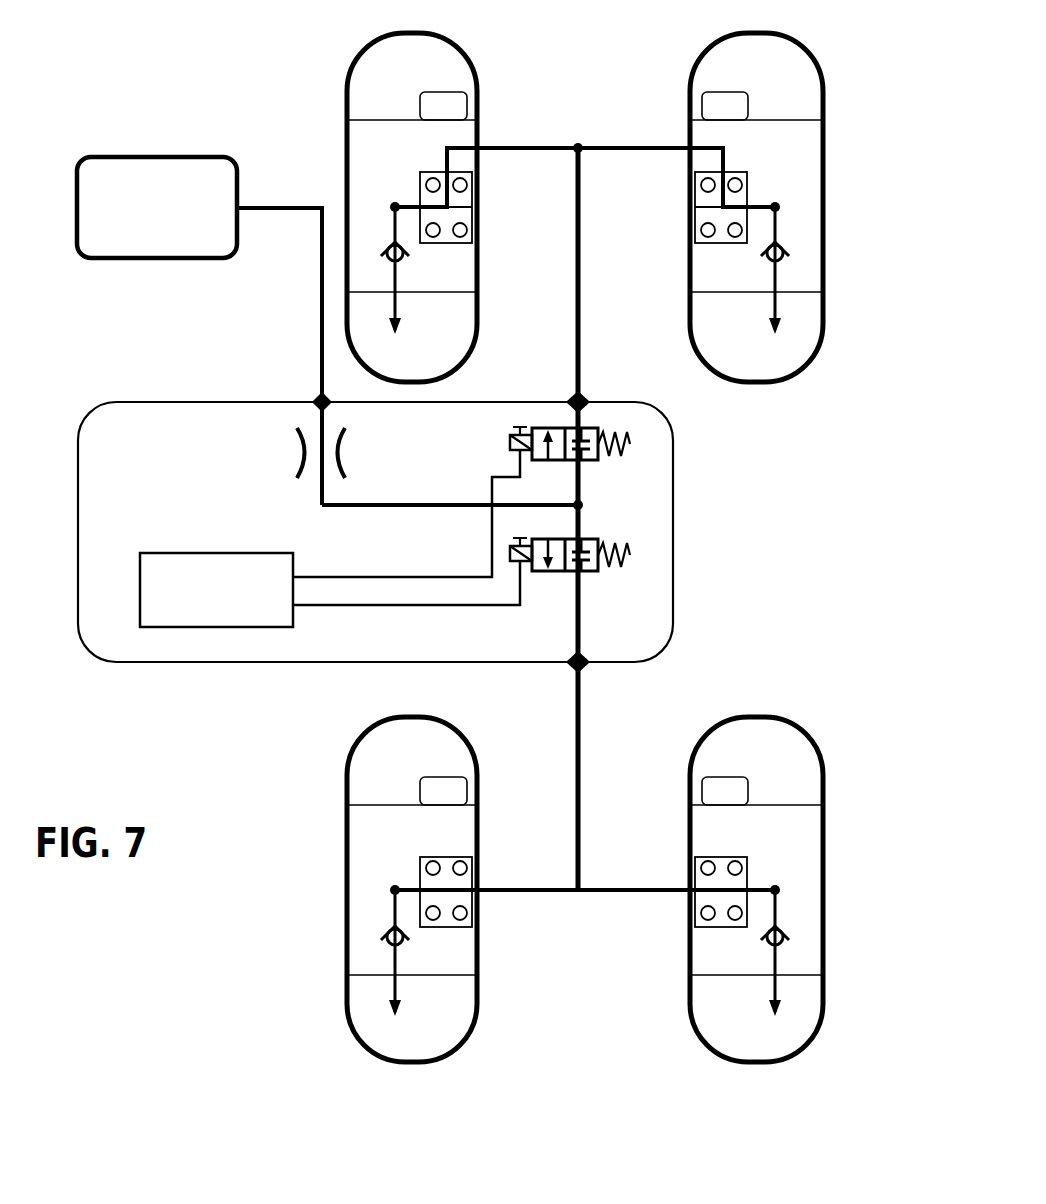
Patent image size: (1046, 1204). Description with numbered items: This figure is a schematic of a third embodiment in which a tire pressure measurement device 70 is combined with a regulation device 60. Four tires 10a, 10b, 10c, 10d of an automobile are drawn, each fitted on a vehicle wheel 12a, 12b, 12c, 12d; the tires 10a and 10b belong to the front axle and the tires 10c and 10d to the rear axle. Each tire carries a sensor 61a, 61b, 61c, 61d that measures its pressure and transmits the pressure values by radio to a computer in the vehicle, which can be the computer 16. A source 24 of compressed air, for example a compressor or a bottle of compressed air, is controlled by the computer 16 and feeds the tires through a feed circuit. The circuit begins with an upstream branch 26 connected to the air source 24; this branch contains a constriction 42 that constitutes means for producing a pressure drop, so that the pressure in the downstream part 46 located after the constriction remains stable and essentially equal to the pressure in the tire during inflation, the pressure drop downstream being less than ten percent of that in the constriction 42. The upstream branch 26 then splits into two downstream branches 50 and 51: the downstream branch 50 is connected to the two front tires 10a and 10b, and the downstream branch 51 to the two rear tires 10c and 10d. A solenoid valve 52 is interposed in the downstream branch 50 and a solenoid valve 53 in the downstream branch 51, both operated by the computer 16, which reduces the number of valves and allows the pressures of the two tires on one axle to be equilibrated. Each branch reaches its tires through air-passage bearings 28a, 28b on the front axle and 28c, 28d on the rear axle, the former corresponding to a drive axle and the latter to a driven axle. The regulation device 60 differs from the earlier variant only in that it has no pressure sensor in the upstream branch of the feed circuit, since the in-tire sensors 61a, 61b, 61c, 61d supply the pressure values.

The tire 10a is at (405, 75).
The tire 10b is at (788, 54).
The tire 10c is at (373, 750).
The tire 10d is at (797, 750).
The vehicle wheel 12a is at (387, 155).
The vehicle wheel 12b is at (793, 160).
The vehicle wheel 12c is at (410, 838).
The vehicle wheel 12d is at (797, 840).
The sensor 61a is at (437, 108).
The sensor 61b is at (735, 102).
The sensor 61c is at (433, 790).
The sensor 61d is at (717, 795).
The bearing 28a is at (462, 182).
The bearing 28b is at (713, 177).
The bearing 28c is at (438, 918).
The bearing 28d is at (704, 918).
The source of compressed air 24 is at (157, 207).
The computer 16 is at (330, 538).
The upstream branch 26 is at (430, 500).
The constriction 42 is at (310, 450).
The downstream part 46 is at (455, 503).
The downstream branch 50 is at (580, 350).
The downstream branch 51 is at (582, 598).
The solenoid valve 52 is at (632, 438).
The solenoid valve 53 is at (632, 560).
The regulation device 60 is at (800, 437).
The tire pressure measurement device 70 is at (795, 568).